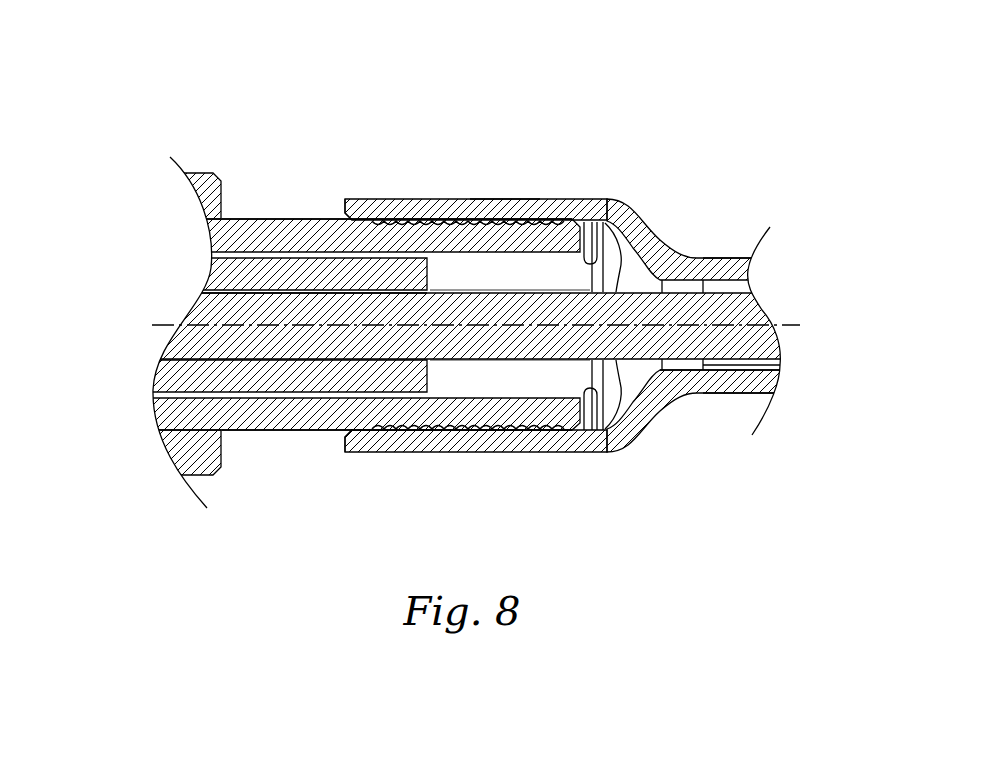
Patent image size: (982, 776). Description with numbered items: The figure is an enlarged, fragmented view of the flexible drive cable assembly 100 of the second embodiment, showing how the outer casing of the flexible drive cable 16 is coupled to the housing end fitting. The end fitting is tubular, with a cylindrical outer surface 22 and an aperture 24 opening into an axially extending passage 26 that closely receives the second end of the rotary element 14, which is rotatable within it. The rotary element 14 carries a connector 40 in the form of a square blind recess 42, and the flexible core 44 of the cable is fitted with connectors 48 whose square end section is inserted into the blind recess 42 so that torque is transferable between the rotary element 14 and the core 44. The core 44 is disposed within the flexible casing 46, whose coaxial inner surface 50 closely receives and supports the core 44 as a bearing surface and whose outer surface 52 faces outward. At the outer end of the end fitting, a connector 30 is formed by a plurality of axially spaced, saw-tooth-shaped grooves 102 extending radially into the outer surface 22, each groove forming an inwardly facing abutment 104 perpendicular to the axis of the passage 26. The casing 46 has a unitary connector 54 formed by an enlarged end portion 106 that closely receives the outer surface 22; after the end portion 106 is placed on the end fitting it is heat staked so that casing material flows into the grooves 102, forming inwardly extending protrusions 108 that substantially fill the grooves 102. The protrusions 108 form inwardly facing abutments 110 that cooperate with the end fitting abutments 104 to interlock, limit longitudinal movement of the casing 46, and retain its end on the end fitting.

The flexible drive cable assembly 100 is at (432, 106).
The rotary element 14 is at (247, 217).
The outer surface 22 is at (305, 218).
The couplings or connectors 48 is at (222, 288).
The connector or coupling 40 is at (191, 352).
The blind recess or opening 42 is at (197, 305).
The grooves or recesses 102 is at (473, 196).
The enlarged end portion 106 is at (490, 451).
The unitary connector 54 is at (500, 194).
The inwardly extending protrusions 108 is at (367, 198).
The inwardly facing abutments 110 is at (408, 198).
The connector 30 is at (445, 198).
The inwardly facing abutment 104 is at (548, 196).
The aperture 24 is at (606, 449).
The flexible drive cable 16 is at (718, 254).
The inner drive shaft or core 44 is at (623, 250).
The outer sheath or casing 46 is at (748, 256).
The inner surface 50 is at (758, 368).
The outer surface 52 is at (735, 393).
The inner conduit or passage 26 is at (510, 340).